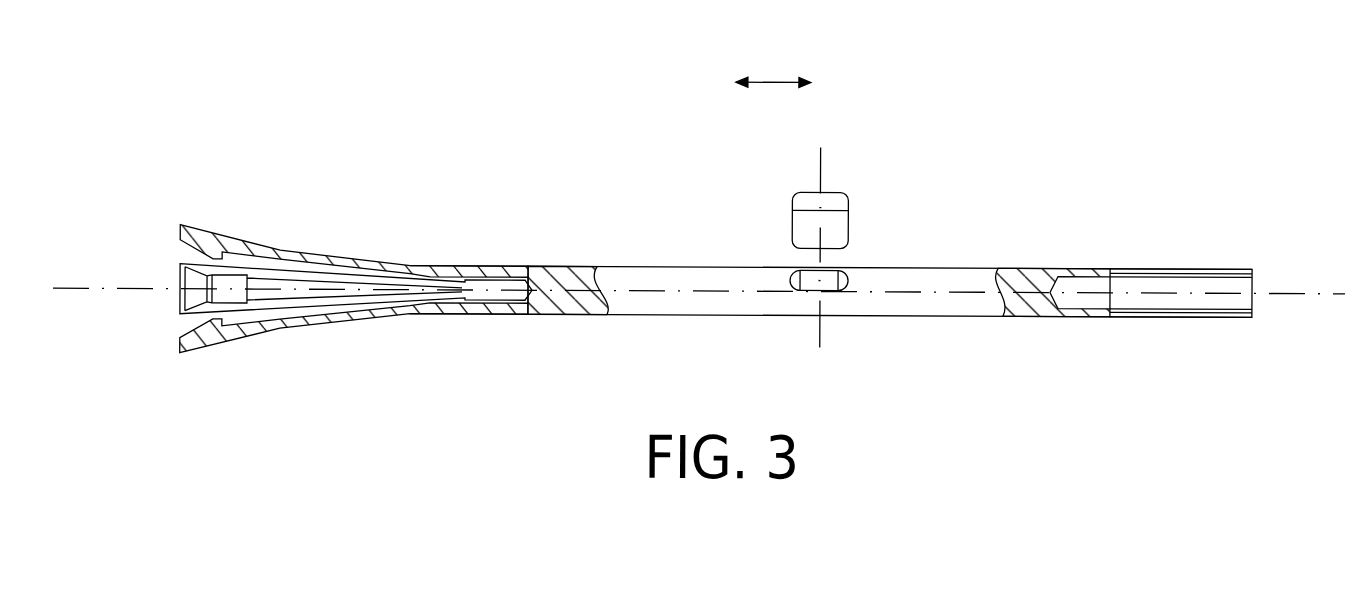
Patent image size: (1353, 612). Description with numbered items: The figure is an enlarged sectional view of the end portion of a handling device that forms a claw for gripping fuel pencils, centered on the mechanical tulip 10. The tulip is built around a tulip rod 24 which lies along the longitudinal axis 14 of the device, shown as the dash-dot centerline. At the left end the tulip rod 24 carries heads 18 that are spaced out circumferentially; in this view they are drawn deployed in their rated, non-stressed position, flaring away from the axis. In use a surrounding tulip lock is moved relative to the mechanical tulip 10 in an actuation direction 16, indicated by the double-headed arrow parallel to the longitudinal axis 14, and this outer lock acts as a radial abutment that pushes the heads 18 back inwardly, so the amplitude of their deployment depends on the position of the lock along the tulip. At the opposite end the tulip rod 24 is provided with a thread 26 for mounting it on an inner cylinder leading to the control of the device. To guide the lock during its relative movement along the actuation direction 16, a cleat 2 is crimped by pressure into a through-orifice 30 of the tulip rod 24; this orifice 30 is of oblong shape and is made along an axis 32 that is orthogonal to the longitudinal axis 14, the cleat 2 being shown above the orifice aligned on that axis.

The mechanical tulip 10 is at (527, 112).
The cleat 2 is at (849, 213).
The longitudinal axis 14 is at (969, 289).
The actuation direction 16 is at (773, 80).
The heads 18 is at (288, 246).
The tulip rod 24 is at (664, 279).
The thread 26 is at (1197, 286).
The through-orifice 30 is at (841, 281).
The axis 32 is at (820, 160).